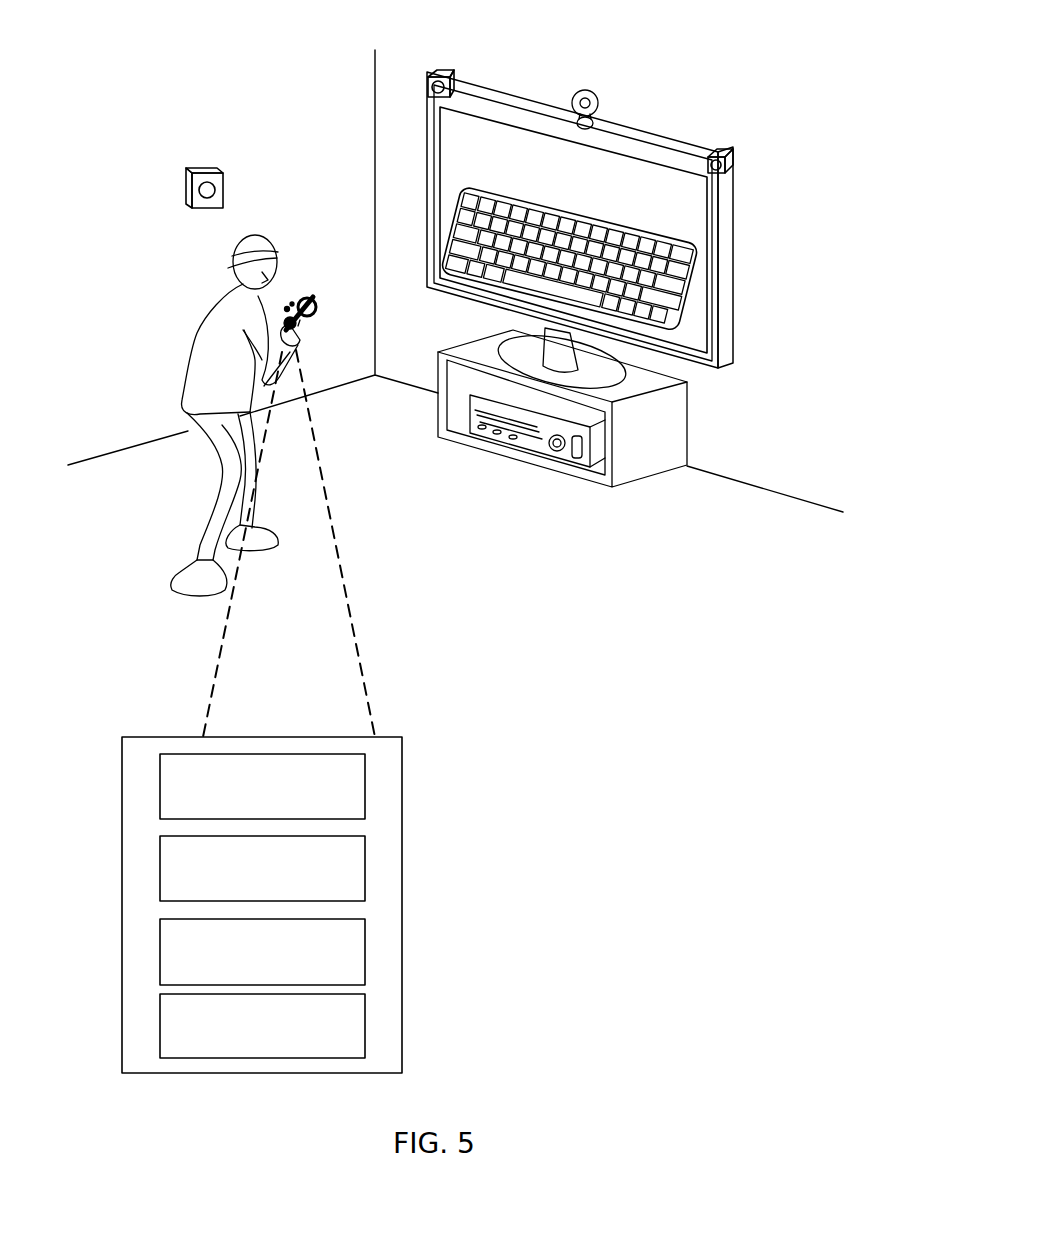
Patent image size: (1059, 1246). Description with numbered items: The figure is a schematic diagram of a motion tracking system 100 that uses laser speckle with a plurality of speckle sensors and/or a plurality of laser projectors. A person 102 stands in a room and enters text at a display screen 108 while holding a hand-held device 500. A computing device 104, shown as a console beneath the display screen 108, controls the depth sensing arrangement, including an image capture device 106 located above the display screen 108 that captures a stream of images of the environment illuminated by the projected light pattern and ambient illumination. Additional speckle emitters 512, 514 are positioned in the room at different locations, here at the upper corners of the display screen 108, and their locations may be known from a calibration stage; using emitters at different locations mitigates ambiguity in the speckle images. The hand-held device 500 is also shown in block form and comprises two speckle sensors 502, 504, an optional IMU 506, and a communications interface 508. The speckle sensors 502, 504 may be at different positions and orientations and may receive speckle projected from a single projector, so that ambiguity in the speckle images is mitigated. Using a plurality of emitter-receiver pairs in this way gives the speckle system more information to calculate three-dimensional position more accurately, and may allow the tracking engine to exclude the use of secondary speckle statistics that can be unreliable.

The motion tracking system 100 is at (265, 100).
The person 102 is at (198, 327).
The computing device 104 is at (527, 448).
The image capture device 106 is at (606, 104).
The display screen 108 is at (733, 258).
The hand-held device 500 is at (207, 173).
The speckle sensor 502 is at (365, 787).
The speckle sensor 504 is at (365, 866).
The IMU 506 is at (365, 952).
The communications interface 508 is at (365, 1025).
The speckle emitter 512 is at (450, 68).
The speckle emitter 514 is at (730, 153).